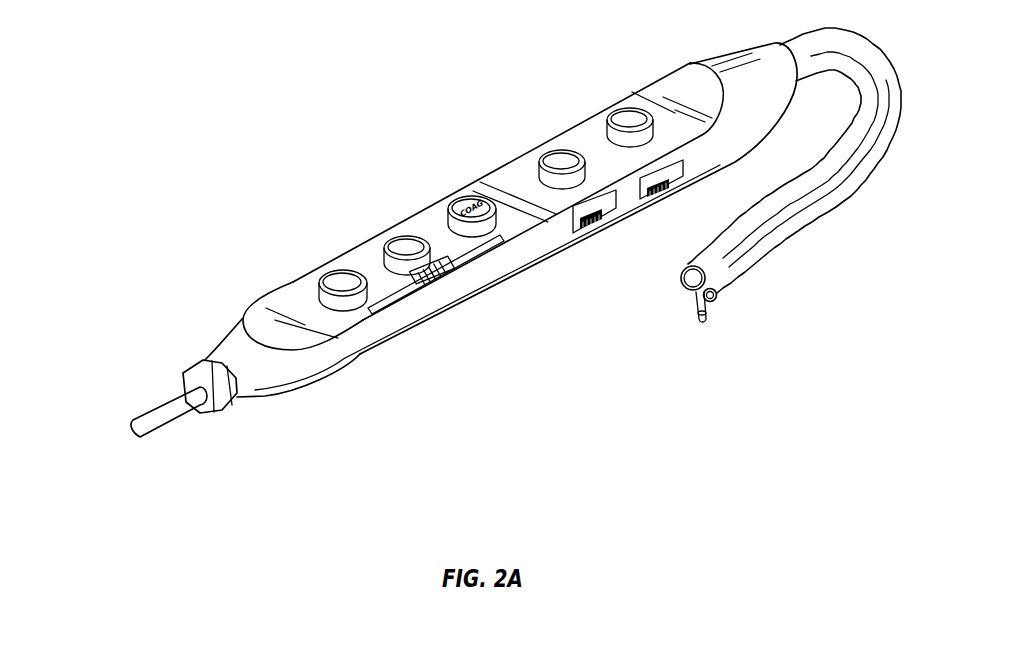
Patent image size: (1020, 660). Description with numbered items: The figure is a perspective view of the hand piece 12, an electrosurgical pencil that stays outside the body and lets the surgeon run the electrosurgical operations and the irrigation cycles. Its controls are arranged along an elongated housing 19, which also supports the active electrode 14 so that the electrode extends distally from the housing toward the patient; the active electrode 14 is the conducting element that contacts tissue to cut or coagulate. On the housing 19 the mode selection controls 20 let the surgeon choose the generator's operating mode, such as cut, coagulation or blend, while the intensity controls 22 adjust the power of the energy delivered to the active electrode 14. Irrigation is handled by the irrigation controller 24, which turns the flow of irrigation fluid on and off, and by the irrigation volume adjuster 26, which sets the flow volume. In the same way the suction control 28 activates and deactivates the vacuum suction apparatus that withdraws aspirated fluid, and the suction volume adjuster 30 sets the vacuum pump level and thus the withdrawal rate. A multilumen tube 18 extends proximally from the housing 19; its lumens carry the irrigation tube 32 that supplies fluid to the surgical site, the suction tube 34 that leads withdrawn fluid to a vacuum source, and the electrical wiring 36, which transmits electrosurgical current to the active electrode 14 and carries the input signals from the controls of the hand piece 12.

The hand piece 12 is at (327, 145).
The active electrode 14 is at (131, 430).
The multilumen tube 18 is at (782, 252).
The elongated housing 19 is at (411, 207).
The mode selection controls 20 is at (359, 256).
The intensity controls 22 is at (447, 280).
The irrigation controller 24 is at (556, 155).
The irrigation volume adjuster 26 is at (606, 210).
The suction control 28 is at (625, 117).
The suction volume adjuster 30 is at (668, 178).
The irrigation tube 32 is at (717, 297).
The suction tube 34 is at (681, 283).
The electrical wiring 36 is at (697, 320).